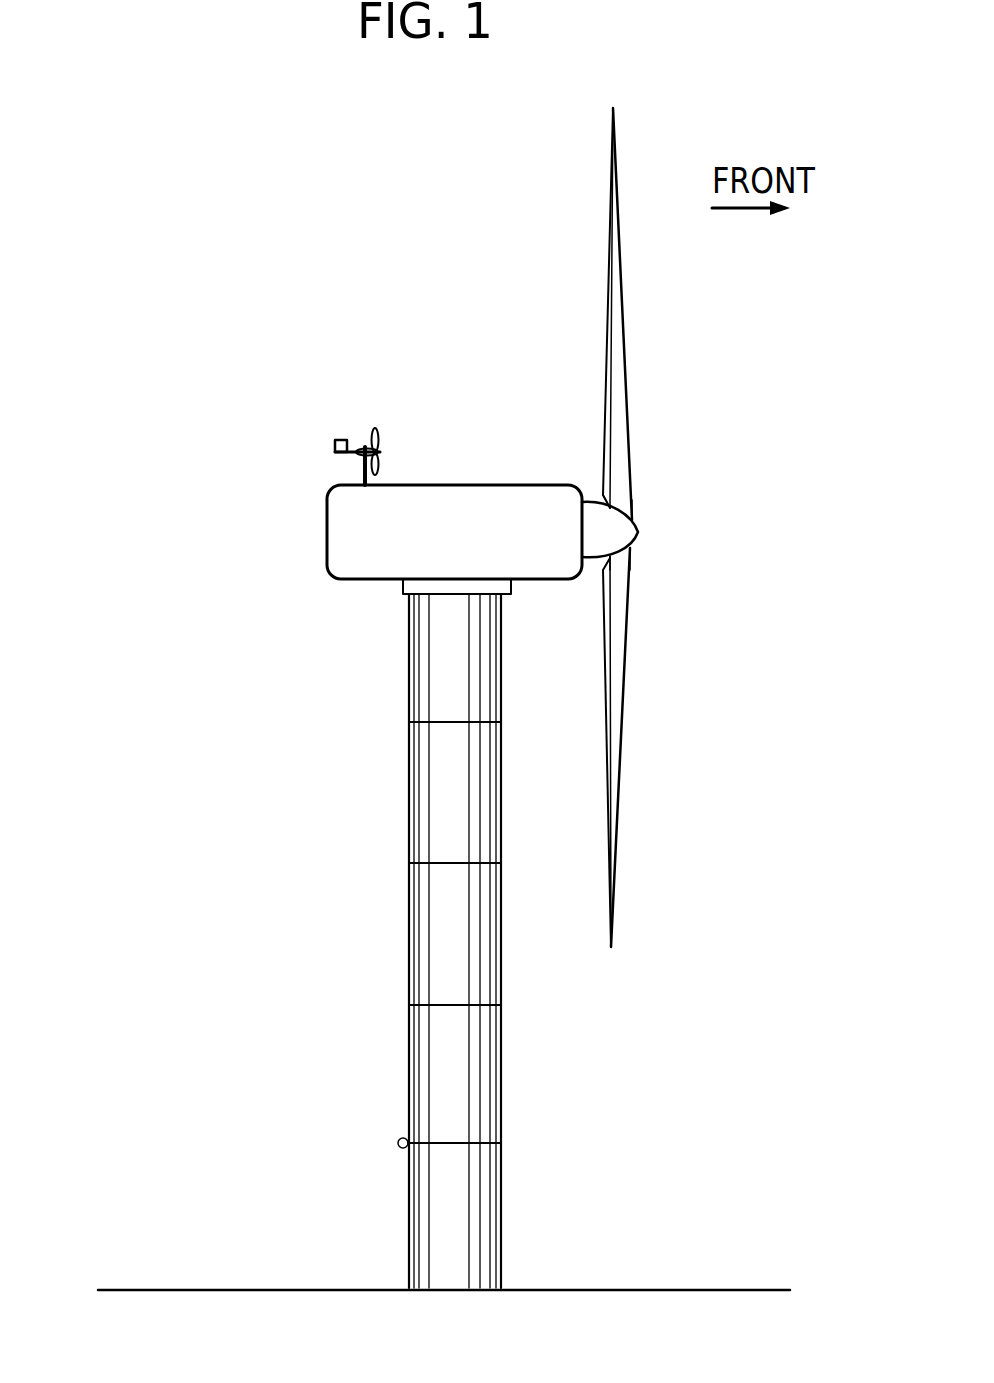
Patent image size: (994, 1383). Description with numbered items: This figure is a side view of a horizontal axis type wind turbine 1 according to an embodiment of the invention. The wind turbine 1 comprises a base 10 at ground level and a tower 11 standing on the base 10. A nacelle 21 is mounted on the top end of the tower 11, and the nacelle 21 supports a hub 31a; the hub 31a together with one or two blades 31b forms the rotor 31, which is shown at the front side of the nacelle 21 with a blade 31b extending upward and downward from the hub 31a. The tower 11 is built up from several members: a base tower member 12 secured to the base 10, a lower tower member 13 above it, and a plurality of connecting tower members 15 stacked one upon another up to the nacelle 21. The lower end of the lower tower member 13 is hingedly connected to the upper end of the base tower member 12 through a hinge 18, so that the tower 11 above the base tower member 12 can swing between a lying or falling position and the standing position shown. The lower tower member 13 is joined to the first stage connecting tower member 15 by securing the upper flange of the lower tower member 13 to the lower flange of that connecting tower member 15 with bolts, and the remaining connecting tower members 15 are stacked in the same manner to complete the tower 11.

The horizontal axis type wind turbine 1 is at (277, 480).
The base 10 is at (167, 1289).
The tower 11 is at (373, 852).
The base tower member 12 is at (408, 1242).
The lower tower member 13 is at (408, 1092).
The connecting tower member 15 is at (409, 662).
The hinge 18 is at (398, 1143).
The nacelle 21 is at (455, 484).
The rotor 31 is at (640, 350).
The hub 31a is at (638, 532).
The blade 31b is at (630, 425).